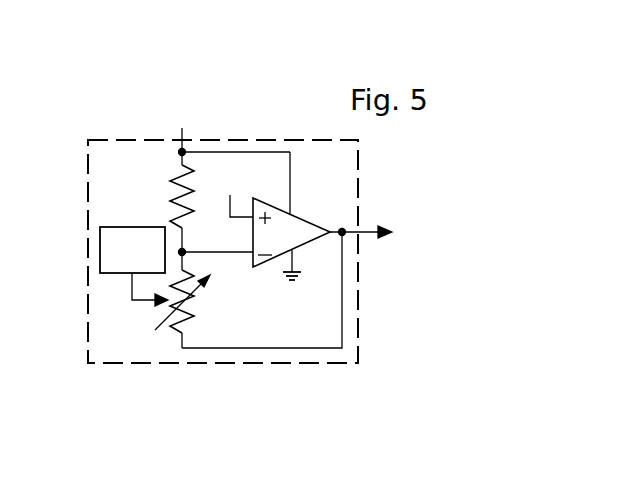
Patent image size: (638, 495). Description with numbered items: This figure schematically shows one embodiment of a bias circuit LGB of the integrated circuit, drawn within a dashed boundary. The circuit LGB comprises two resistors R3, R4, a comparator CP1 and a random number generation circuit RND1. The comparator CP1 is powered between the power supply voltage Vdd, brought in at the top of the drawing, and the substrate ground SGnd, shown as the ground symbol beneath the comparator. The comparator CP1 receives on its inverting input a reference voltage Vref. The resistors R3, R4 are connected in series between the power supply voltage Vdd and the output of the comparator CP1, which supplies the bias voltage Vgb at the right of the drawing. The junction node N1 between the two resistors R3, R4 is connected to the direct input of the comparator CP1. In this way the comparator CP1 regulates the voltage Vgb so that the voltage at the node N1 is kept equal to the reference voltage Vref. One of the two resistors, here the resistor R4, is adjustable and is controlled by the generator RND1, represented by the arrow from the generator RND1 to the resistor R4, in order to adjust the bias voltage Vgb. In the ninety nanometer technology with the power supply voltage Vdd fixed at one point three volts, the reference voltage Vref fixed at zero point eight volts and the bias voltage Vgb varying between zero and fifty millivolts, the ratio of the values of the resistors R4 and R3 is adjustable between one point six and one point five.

The bias circuit LGB is at (352, 171).
The power supply voltage Vdd is at (198, 126).
The resistor R3 is at (168, 194).
The junction node N1 is at (187, 248).
The resistor R4 is at (165, 318).
The random number generation circuit RND1 is at (134, 266).
The reference voltage Vref is at (229, 194).
The comparator CP1 is at (298, 244).
The substrate ground SGnd is at (292, 283).
The bias voltage Vgb is at (308, 286).